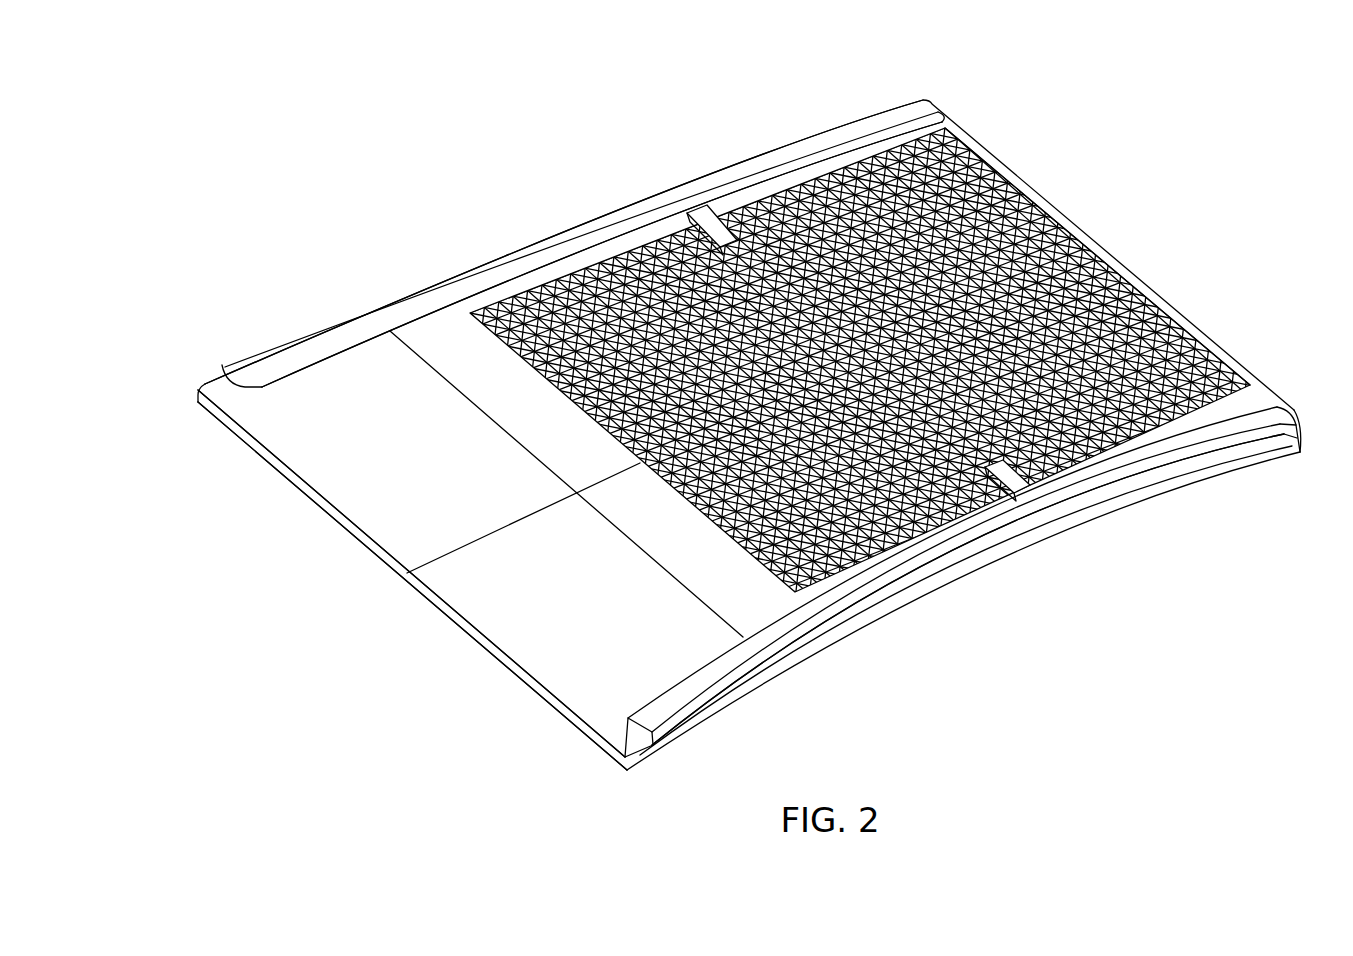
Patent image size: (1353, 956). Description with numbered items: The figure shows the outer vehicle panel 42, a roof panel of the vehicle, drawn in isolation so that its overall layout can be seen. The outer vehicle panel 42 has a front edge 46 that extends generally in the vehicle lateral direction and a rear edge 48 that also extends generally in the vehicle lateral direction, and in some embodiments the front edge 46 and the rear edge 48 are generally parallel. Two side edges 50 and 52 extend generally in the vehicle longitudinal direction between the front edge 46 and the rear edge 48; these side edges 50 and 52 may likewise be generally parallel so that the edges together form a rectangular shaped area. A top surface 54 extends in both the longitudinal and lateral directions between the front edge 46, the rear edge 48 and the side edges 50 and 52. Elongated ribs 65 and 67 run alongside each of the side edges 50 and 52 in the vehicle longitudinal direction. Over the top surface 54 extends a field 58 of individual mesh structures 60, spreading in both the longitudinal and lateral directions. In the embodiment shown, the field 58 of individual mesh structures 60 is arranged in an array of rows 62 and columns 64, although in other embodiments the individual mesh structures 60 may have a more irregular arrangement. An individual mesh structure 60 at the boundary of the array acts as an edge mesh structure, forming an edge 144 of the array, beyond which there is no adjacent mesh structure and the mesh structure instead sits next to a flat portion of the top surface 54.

The outer vehicle panel 42 is at (580, 152).
The front edge 46 is at (397, 580).
The rear edge 48 is at (1267, 387).
The side edge 50 is at (428, 282).
The side edge 52 is at (867, 622).
The top surface 54 is at (578, 632).
The field of individual mesh structures 58 is at (1058, 160).
The individual mesh structure 60 is at (1178, 295).
The row 62 is at (535, 252).
The column 64 is at (1107, 220).
The elongated rib 65 is at (800, 150).
The elongated rib 67 is at (1182, 463).
The edge of the array 144 is at (1062, 510).